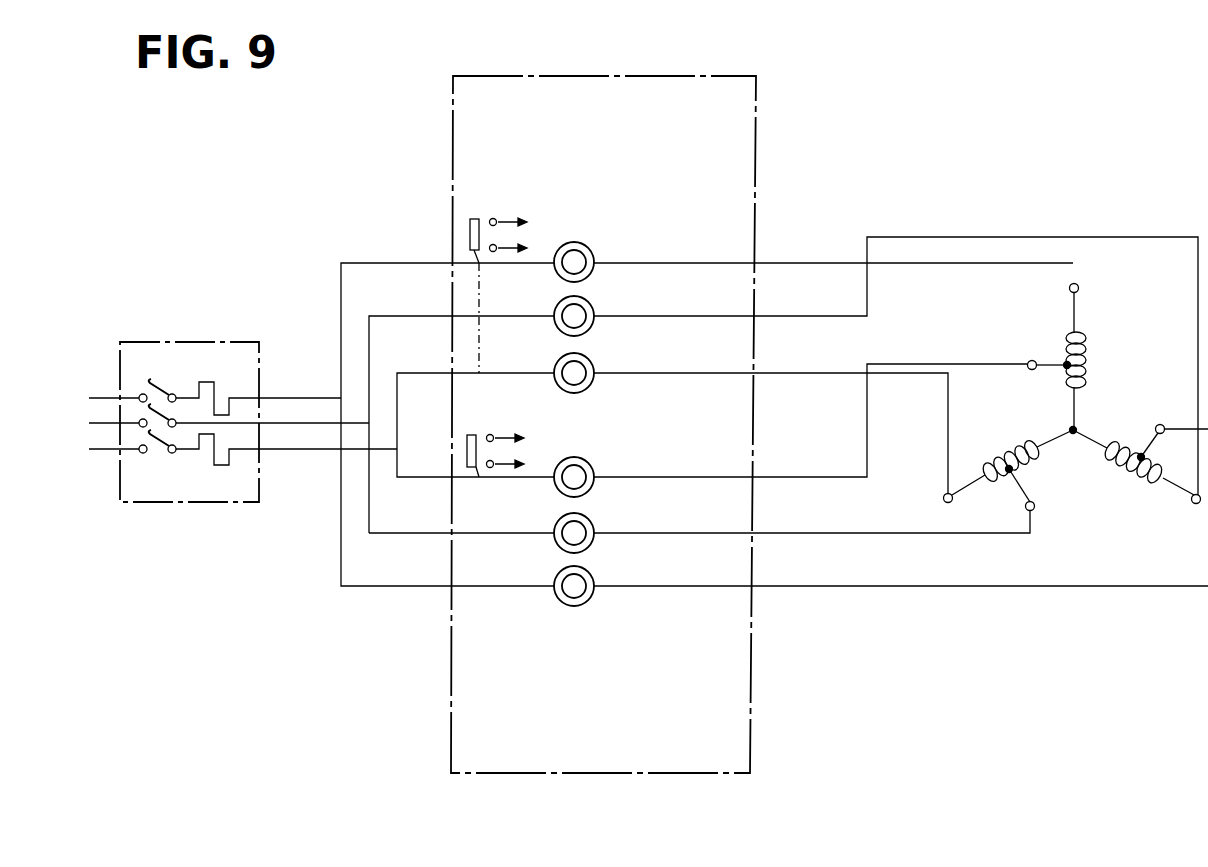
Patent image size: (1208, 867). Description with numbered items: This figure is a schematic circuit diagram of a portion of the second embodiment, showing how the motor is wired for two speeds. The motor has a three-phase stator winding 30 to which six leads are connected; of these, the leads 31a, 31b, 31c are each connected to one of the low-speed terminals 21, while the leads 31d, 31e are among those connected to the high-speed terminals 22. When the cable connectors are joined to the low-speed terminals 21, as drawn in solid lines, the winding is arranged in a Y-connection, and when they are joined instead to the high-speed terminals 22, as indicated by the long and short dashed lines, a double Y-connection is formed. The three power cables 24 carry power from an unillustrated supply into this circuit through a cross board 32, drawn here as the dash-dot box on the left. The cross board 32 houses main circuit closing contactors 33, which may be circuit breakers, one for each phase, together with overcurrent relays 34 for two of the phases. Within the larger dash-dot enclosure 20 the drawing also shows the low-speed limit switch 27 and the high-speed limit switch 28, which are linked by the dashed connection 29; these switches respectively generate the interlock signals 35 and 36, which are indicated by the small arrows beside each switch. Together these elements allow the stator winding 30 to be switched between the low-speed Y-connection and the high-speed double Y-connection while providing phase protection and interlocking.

The control unit 20 is at (756, 158).
The low-speed terminals 21 is at (585, 243).
The high-speed terminals 22 is at (583, 462).
The power cables 24 is at (375, 262).
The low-speed limit switch 27 is at (477, 218).
The high-speed limit switch 28 is at (477, 468).
The interlocking link 29 is at (479, 332).
The three-phase stator winding 30 is at (1076, 426).
The lead 31a is at (1080, 313).
The lead 31b is at (1172, 488).
The lead 31c is at (967, 480).
The lead 31d is at (1052, 362).
The lead 31e is at (1150, 424).
The cross board 32 is at (205, 342).
The main circuit closing contactors 33 is at (155, 455).
The overcurrent relays 34 is at (222, 465).
The interlock signal 35 is at (512, 238).
The interlock signal 36 is at (508, 455).